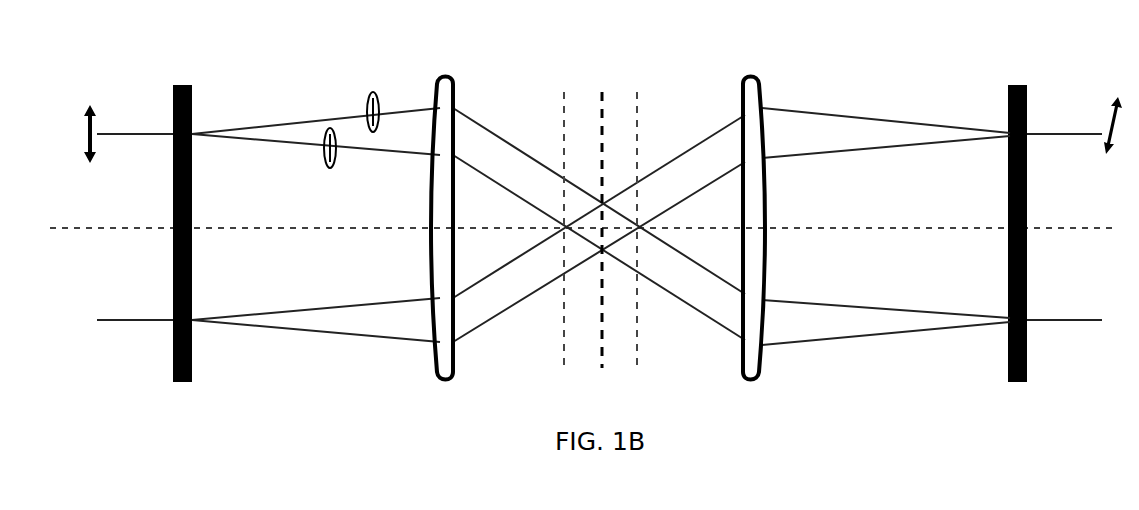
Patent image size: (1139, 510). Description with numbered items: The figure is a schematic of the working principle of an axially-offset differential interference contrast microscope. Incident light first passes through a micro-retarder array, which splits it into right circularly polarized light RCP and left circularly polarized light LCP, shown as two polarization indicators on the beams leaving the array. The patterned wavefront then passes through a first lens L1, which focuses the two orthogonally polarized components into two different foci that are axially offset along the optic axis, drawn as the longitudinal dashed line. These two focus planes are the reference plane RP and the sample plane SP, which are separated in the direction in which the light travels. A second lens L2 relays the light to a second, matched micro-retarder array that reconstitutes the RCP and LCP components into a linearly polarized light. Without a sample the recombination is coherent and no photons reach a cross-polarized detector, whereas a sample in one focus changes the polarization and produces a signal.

The lens L1 is at (445, 211).
The lens L2 is at (751, 211).
The right circularly polarized light RCP is at (371, 95).
The left circularly polarized light LCP is at (331, 167).
The reference plane RP is at (559, 207).
The sample plane SP is at (639, 207).